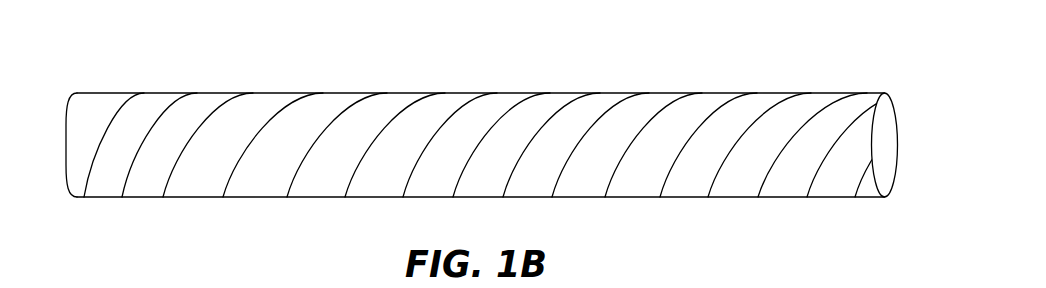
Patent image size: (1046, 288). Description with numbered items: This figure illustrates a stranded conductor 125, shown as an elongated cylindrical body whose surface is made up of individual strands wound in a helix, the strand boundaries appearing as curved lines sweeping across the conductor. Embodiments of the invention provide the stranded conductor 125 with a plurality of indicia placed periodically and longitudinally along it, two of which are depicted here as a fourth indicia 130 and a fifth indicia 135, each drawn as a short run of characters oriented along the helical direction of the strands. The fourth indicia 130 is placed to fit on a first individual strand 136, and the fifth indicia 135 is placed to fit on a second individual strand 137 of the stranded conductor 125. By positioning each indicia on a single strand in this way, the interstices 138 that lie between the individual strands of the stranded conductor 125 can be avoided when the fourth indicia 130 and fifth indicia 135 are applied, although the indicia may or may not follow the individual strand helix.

The stranded conductor 125 is at (410, 93).
The fourth indicia 130 is at (217, 141).
The fifth indicia 135 is at (650, 135).
The first individual strand 136 is at (270, 110).
The second individual strand 137 is at (690, 115).
The interstices 138 is at (180, 163).